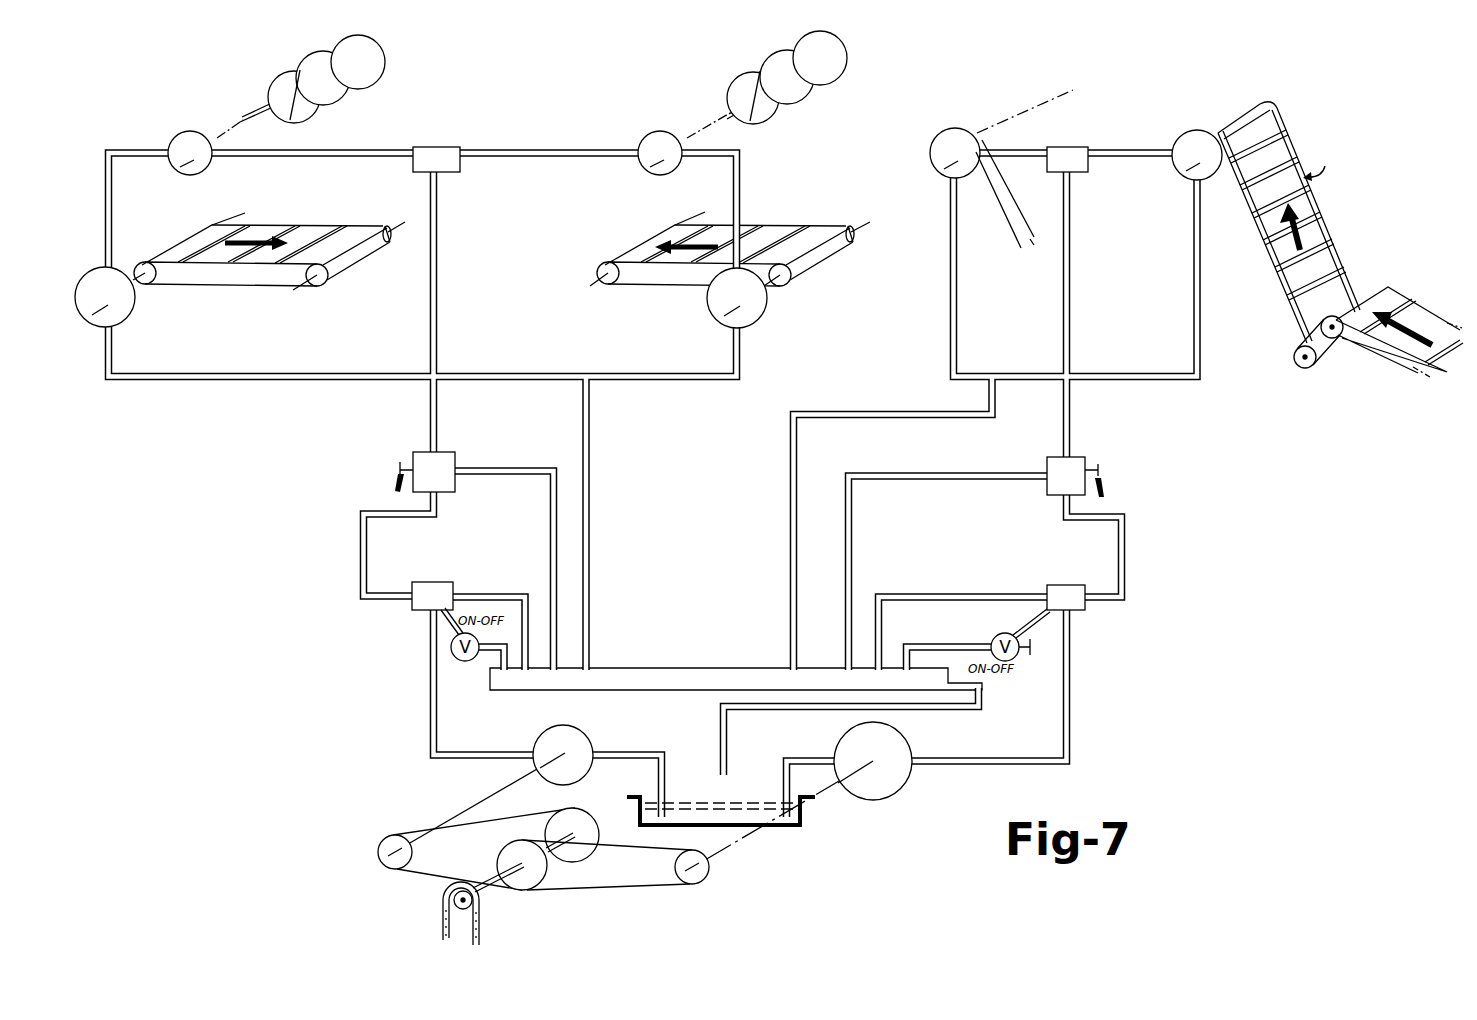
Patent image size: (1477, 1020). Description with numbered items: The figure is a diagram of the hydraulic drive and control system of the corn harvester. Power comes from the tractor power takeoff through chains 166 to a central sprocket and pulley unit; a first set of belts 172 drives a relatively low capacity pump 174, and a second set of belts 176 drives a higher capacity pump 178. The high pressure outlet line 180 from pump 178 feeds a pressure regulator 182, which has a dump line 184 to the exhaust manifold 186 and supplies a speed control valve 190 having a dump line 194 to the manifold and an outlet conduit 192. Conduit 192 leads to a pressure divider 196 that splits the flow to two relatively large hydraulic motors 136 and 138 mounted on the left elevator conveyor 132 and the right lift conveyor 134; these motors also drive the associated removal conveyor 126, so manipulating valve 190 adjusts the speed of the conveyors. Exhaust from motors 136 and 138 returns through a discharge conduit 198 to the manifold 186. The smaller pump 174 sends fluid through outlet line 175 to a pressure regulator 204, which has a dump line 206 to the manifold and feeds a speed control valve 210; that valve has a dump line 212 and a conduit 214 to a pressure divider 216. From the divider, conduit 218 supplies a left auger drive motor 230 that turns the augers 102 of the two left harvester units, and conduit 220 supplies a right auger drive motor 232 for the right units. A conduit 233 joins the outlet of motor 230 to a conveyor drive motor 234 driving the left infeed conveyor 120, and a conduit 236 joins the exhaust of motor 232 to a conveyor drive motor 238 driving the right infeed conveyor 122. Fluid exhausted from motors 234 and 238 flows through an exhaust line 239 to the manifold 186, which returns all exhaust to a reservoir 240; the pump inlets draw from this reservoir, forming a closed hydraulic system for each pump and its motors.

The auger 102 is at (383, 68).
The left infeed conveyor 120 is at (357, 227).
The right infeed conveyor 122 is at (793, 228).
The removal conveyor 126 is at (1405, 390).
The left elevator conveyor 132 is at (1016, 112).
The right elevator conveyor 134 is at (1322, 230).
The hydraulic motor 136 is at (927, 162).
The hydraulic motor 138 is at (1202, 130).
The chains 166 is at (442, 920).
The first set of belts 172 is at (523, 810).
The low capacity pump 174 is at (582, 740).
The outlet line 175 is at (427, 727).
The second set of belts 176 is at (612, 887).
The high capacity pump 178 is at (900, 740).
The outlet line 180 is at (1072, 730).
The pressure regulator 182 is at (1088, 611).
The dump line 184 is at (937, 593).
The exhaust manifold 186 is at (760, 668).
The speed control valve 190 is at (1100, 470).
The outlet conduit 192 is at (1072, 405).
The dump line 194 is at (957, 473).
The pressure divider 196 is at (1083, 173).
The discharge conduit 198 is at (790, 515).
The pressure regulator 204 is at (418, 613).
The dump line 206 is at (538, 607).
The speed control valve 210 is at (455, 487).
The dump line 212 is at (553, 470).
The conduit 214 is at (438, 318).
The pressure divider 216 is at (462, 165).
The conduit 218 is at (300, 158).
The conduit 220 is at (620, 147).
The left auger drive motor 230 is at (187, 133).
The right auger drive motor 232 is at (672, 130).
The conduit 233 is at (113, 207).
The conveyor drive motor 234 is at (130, 313).
The conduit 236 is at (740, 192).
The conveyor drive motor 238 is at (755, 310).
The exhaust line 239 is at (592, 547).
The reservoir 240 is at (810, 812).